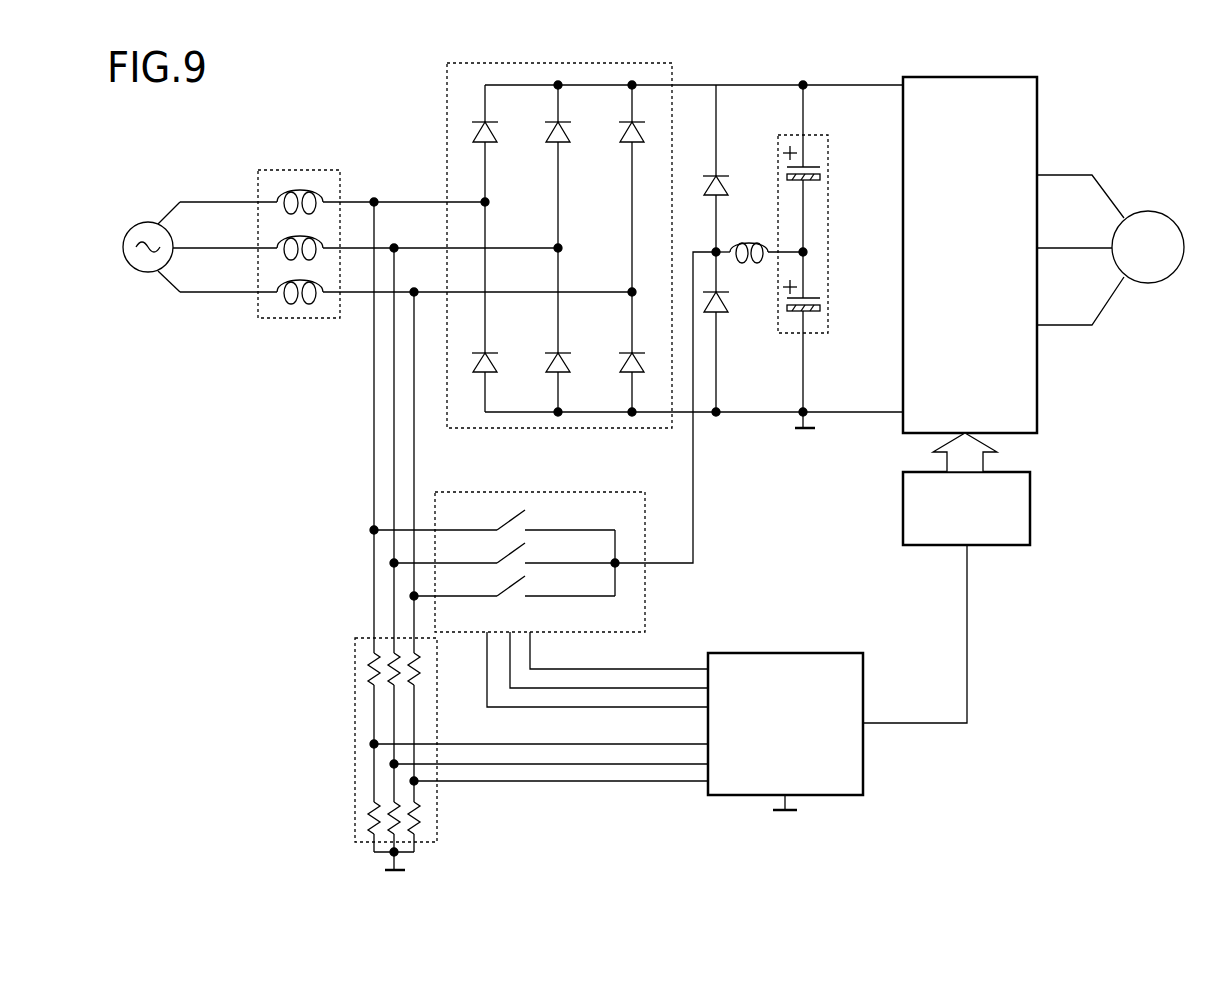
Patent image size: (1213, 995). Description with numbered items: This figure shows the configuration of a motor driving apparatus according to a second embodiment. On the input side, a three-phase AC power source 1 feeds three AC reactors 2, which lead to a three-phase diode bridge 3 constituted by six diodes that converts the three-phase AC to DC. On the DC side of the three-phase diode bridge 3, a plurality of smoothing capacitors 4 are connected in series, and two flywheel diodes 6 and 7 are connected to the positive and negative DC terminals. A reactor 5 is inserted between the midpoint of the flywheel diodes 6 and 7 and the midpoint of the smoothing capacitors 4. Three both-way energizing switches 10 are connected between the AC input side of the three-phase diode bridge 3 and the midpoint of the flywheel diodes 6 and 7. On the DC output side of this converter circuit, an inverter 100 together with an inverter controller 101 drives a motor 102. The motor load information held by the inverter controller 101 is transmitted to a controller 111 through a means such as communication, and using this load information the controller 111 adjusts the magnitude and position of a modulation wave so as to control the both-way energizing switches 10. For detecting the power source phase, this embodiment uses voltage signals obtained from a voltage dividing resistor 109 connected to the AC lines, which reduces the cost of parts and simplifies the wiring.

The three-phase AC power source 1 is at (146, 222).
The AC reactor 2 is at (290, 170).
The three-phase diode bridge 3 is at (447, 110).
The smoothing capacitor 4 is at (778, 158).
The reactor 5 is at (750, 243).
The flywheel diode 6 is at (713, 175).
The flywheel diode 7 is at (722, 313).
The both-way energizing switch 10 is at (542, 492).
The inverter 100 is at (1038, 114).
The inverter controller 101 is at (1030, 510).
The motor 102 is at (1148, 211).
The voltage dividing resistor 109 is at (355, 665).
The controller 111 is at (785, 653).